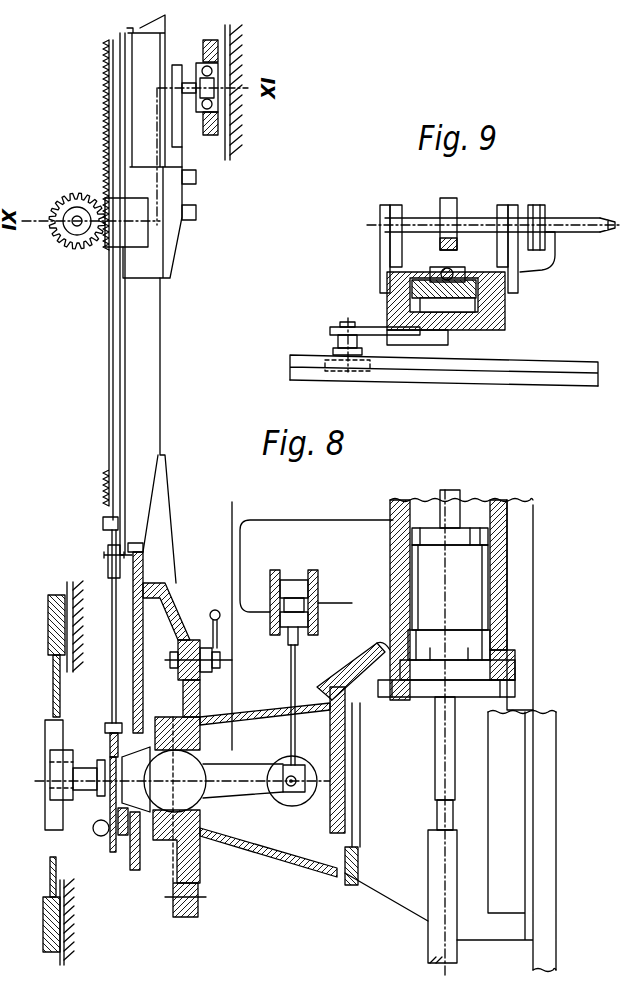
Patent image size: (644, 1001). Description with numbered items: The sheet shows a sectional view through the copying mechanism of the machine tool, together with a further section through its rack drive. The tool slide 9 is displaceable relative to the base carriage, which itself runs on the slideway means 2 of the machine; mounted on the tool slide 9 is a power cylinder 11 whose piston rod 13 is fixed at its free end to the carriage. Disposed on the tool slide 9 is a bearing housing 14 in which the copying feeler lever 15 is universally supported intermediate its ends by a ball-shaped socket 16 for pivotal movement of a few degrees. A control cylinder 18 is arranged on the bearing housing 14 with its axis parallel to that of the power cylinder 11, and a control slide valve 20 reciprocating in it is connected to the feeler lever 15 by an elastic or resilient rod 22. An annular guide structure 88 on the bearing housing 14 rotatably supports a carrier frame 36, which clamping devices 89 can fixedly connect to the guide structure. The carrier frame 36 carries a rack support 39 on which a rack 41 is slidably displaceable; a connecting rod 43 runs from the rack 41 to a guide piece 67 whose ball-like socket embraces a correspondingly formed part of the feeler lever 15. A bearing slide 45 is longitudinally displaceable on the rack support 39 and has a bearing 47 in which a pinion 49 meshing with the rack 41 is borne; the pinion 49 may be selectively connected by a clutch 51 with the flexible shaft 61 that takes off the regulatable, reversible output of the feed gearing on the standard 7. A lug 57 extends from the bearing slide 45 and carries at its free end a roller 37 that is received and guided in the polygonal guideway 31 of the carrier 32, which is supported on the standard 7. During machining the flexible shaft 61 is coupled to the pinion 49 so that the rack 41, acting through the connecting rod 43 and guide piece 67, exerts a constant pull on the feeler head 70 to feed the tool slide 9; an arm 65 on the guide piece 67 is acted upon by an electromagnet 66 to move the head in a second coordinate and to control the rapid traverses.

In FIG. 8, the slideway means 2 is at (558, 783).
In FIG. 8, the standard 7 is at (238, 42).
In FIG. 8, the tool slide 9 is at (388, 908).
In FIG. 8, the power cylinder 11 is at (510, 518).
In FIG. 8, the piston rod 13 is at (462, 508).
In FIG. 8, the bearing housing 14 is at (283, 867).
In FIG. 8, the copying feeler lever 15 is at (232, 800).
In FIG. 8, the ball-shaped socket 16 is at (203, 805).
In FIG. 8, the control cylinder 18 is at (318, 575).
In FIG. 8, the control slide valve 20 is at (297, 577).
In FIG. 8, the resilient rod 22 is at (297, 658).
In FIG. 8, the polygonal guideway 31 is at (207, 137).
In FIG. 9, the polygonal guideway 31 is at (573, 362).
In FIG. 8, the carrier 32 is at (224, 33).
In FIG. 9, the carrier 32 is at (580, 388).
In FIG. 8, the carrier frame 36 is at (182, 598).
In FIG. 8, the roller 37 is at (218, 108).
In FIG. 9, the roller 37 is at (323, 350).
In FIG. 8, the rack support 39 is at (161, 402).
In FIG. 9, the rack support 39 is at (490, 300).
In FIG. 8, the rack 41 is at (102, 515).
In FIG. 9, the rack 41 is at (430, 268).
In FIG. 8, the connecting rod 43 is at (110, 683).
In FIG. 9, the connecting rod 43 is at (458, 270).
In FIG. 8, the bearing slide 45 is at (182, 244).
In FIG. 9, the bearing slide 45 is at (503, 330).
In FIG. 8, the bearing 47 is at (120, 210).
In FIG. 9, the bearing 47 is at (384, 255).
In FIG. 8, the pinion 49 is at (72, 252).
In FIG. 9, the pinion 49 is at (456, 200).
In FIG. 9, the clutch 51 is at (540, 205).
In FIG. 8, the lug 57 is at (176, 65).
In FIG. 9, the lug 57 is at (372, 324).
In FIG. 9, the flexible shaft 61 is at (611, 240).
In FIG. 8, the arm 65 is at (110, 855).
In FIG. 8, the electromagnet 66 is at (98, 834).
In FIG. 8, the guide piece 67 is at (108, 748).
In FIG. 8, the feeler head 70 is at (45, 786).
In FIG. 8, the annular guide structure 88 is at (198, 918).
In FIG. 8, the clamping device 89 is at (220, 672).